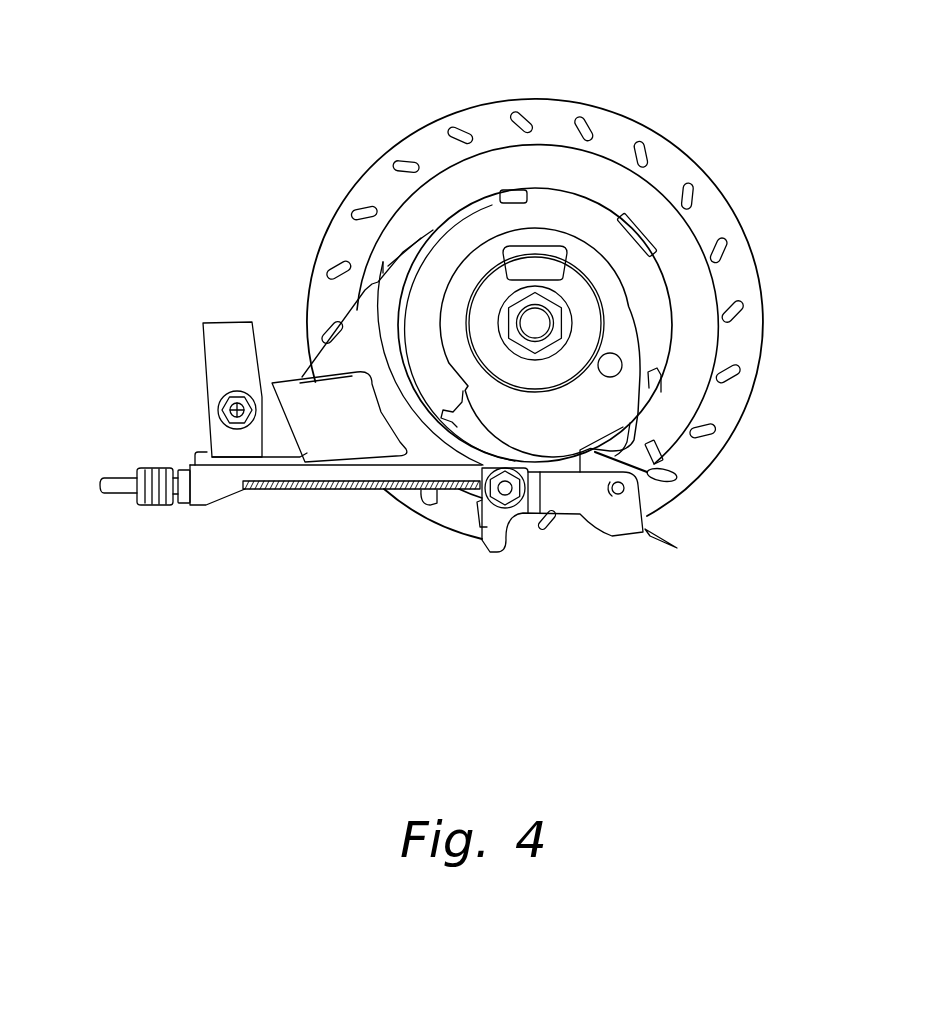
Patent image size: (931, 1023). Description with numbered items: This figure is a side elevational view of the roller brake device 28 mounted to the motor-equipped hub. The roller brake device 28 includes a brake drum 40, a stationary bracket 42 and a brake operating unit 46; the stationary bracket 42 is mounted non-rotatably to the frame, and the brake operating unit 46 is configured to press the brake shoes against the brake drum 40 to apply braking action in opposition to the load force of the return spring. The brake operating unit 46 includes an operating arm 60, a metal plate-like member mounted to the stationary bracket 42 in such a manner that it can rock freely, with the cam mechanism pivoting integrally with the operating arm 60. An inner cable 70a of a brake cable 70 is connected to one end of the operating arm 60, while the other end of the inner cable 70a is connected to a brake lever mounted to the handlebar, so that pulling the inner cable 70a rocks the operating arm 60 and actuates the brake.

The roller brake device 28 is at (697, 106).
The brake drum 40 is at (680, 243).
The stationary bracket 42 is at (353, 440).
The brake operating unit 46 is at (555, 537).
The operating arm 60 is at (680, 479).
The brake cable 70 is at (115, 496).
The inner cable 70a is at (282, 490).